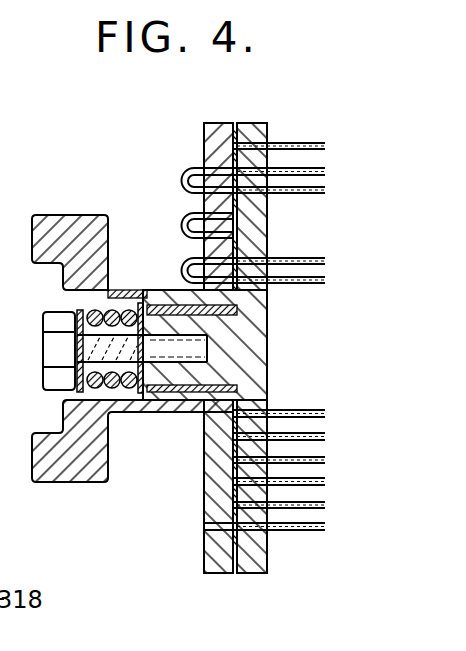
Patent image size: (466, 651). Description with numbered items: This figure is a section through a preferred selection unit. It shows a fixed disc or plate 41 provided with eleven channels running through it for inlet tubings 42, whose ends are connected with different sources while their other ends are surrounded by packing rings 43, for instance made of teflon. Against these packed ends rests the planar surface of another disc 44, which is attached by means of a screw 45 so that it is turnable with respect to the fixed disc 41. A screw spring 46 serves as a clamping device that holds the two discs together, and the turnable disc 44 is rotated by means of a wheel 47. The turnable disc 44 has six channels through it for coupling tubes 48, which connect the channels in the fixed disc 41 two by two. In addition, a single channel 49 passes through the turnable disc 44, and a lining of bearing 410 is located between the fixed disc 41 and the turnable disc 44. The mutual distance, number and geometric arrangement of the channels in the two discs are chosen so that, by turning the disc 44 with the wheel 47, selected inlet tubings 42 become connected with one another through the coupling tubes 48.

The fixed disc 41 is at (267, 352).
The inlet tubings 42 is at (325, 149).
The packing rings 43 is at (253, 132).
The turnable disc 44 is at (217, 132).
The screw 45 is at (53, 347).
The screw spring 46 is at (97, 323).
The wheel 47 is at (65, 232).
The coupling tubes 48 is at (177, 183).
The single channel 49 is at (213, 533).
The lining of bearing 410 is at (172, 413).